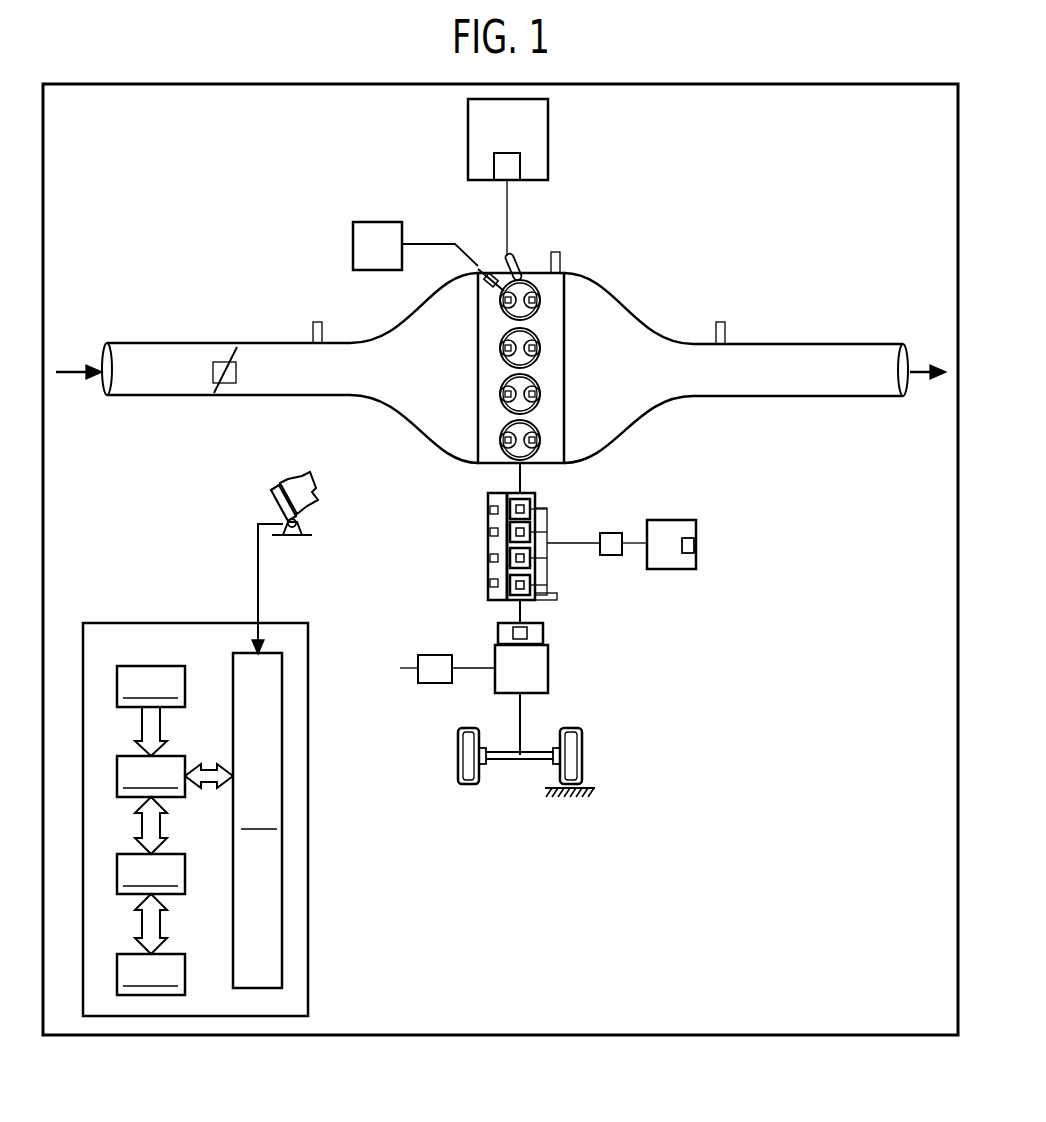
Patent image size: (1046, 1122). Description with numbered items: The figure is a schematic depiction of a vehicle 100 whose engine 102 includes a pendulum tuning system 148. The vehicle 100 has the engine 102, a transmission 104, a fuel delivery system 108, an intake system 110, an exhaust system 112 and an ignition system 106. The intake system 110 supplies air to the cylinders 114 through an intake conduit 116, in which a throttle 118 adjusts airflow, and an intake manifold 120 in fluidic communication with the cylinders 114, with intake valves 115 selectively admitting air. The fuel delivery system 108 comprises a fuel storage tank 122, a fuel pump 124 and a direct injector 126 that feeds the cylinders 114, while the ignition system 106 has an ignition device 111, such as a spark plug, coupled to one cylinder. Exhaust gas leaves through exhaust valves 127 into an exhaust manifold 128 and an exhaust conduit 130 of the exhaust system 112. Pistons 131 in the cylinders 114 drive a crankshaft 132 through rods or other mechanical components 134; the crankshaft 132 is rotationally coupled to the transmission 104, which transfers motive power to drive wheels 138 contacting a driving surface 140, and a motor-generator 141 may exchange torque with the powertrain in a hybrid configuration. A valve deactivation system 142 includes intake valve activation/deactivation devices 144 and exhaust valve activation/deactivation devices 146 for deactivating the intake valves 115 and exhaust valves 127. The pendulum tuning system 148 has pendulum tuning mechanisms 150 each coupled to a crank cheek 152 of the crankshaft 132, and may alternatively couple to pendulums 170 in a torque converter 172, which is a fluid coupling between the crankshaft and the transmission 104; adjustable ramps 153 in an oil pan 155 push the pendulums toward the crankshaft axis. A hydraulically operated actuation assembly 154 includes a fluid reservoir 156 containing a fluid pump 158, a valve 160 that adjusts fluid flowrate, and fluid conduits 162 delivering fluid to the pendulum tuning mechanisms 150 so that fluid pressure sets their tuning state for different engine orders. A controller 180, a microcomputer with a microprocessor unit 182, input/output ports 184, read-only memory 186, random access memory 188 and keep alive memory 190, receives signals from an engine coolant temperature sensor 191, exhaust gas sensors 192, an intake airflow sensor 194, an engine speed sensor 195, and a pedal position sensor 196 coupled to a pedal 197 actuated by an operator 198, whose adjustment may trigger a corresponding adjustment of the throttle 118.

The vehicle 100 is at (100, 84).
The engine 102 is at (500, 258).
The transmission 104 is at (548, 668).
The ignition system 106 is at (406, 232).
The fuel delivery system 108 is at (519, 289).
The intake system 110 is at (267, 341).
The ignition device 111 is at (481, 279).
The exhaust system 112 is at (755, 334).
The cylinders 114 is at (573, 340).
The intake valves 115 is at (506, 343).
The intake conduit 116 is at (253, 397).
The throttle 118 is at (236, 374).
The intake manifold 120 is at (466, 413).
The fuel storage tank 122 is at (479, 139).
The fuel pump 124 is at (509, 147).
The injector 126 is at (519, 267).
The exhaust valves 127 is at (538, 348).
The exhaust manifold 128 is at (519, 370).
The exhaust conduit 130 is at (780, 398).
The pistons 131 is at (464, 339).
The crankshaft 132 is at (518, 537).
The rods and/or other suitable mechanical components 134 is at (519, 478).
The drive wheels 138 is at (582, 757).
The driving surface 140 is at (556, 788).
The motor-generator 141 is at (400, 668).
The valve deactivation system 142 is at (519, 362).
The intake valve activation/deactivation devices 144 is at (509, 357).
The exhaust valve activation/deactivation devices 146 is at (519, 357).
The pendulum tuning system 148 is at (686, 547).
The pendulum tuning mechanisms 150 is at (516, 511).
The crank cheek 152 is at (512, 511).
The adjustable ramps 153 is at (490, 585).
The actuation assembly 154 is at (703, 554).
The oil pan 155 is at (490, 578).
The fluid reservoir 156 is at (650, 520).
The fluid pump 158 is at (690, 555).
The valve 160 is at (611, 556).
The fluid conduits 162 is at (566, 545).
The pendulums 170 is at (513, 634).
The torque converter 172 is at (527, 623).
The controller 180 is at (195, 803).
The microprocessor unit 182 is at (172, 757).
The input/output ports 184 is at (233, 684).
The read-only memory 186 is at (118, 666).
The random access memory 188 is at (172, 855).
The keep alive memory 190 is at (172, 956).
The engine coolant temperature sensor 191 is at (560, 265).
The exhaust gas sensors 192 is at (725, 332).
The intake airflow sensor 194 is at (313, 331).
The engine speed sensor 195 is at (558, 597).
The pedal position sensor 196 is at (306, 558).
The pedal 197 is at (276, 494).
The operator 198 is at (320, 489).